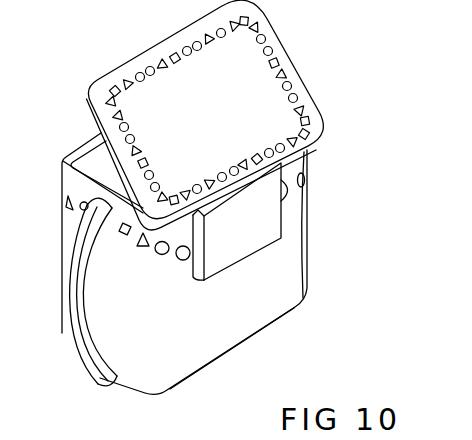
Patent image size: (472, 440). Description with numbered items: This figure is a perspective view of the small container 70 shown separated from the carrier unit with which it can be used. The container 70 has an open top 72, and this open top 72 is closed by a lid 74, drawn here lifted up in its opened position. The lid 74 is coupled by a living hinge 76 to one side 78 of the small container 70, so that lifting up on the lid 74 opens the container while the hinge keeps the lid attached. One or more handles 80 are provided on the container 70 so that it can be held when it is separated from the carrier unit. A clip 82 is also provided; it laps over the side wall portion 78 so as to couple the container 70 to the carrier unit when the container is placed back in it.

The small container 70 is at (320, 256).
The open top 72 is at (98, 152).
The lid 74 is at (291, 61).
The living hinge 76 is at (191, 257).
The side 78 is at (279, 300).
The handle 80 is at (62, 332).
The clip 82 is at (270, 225).